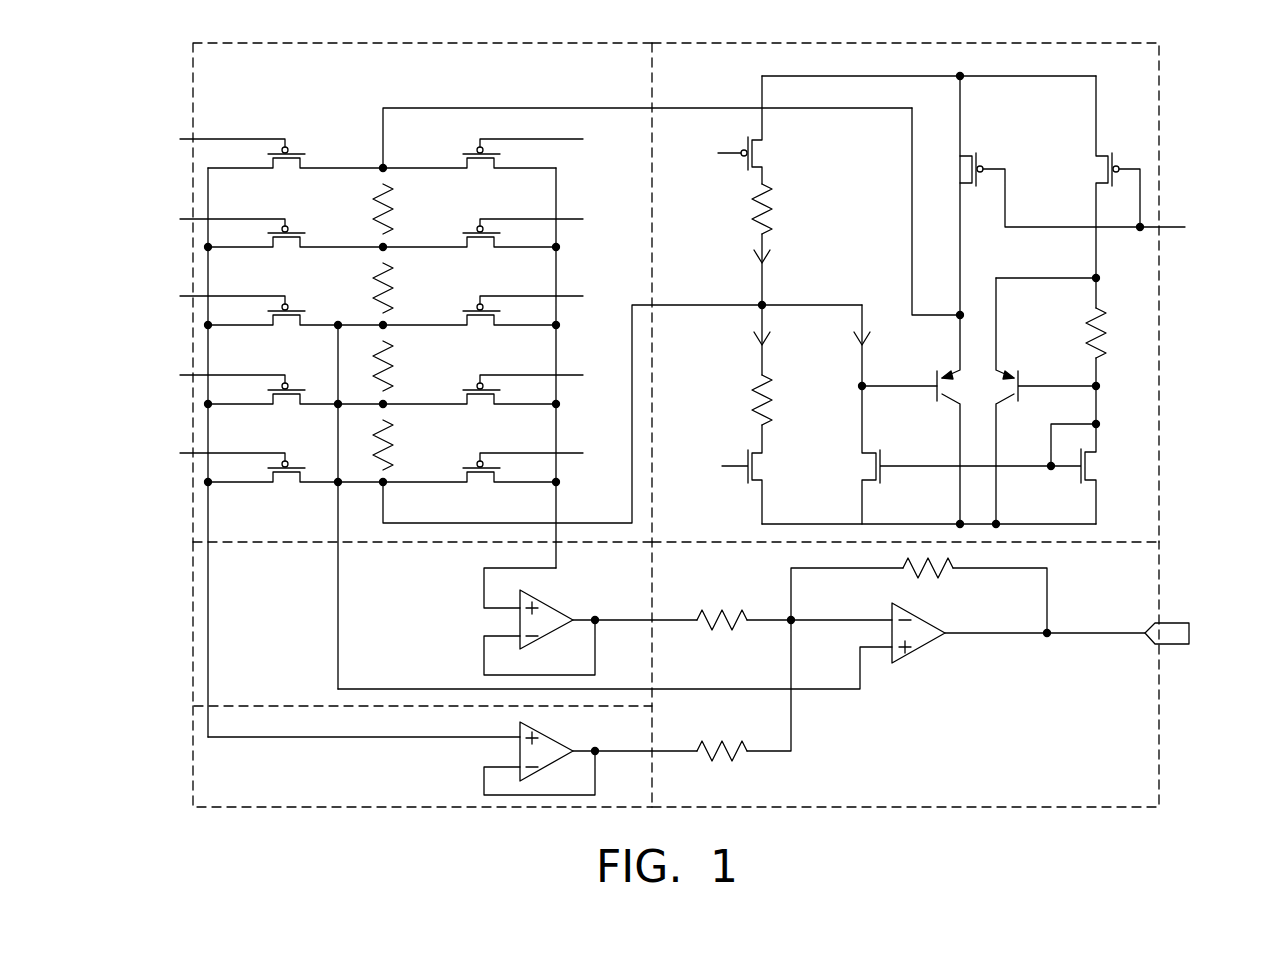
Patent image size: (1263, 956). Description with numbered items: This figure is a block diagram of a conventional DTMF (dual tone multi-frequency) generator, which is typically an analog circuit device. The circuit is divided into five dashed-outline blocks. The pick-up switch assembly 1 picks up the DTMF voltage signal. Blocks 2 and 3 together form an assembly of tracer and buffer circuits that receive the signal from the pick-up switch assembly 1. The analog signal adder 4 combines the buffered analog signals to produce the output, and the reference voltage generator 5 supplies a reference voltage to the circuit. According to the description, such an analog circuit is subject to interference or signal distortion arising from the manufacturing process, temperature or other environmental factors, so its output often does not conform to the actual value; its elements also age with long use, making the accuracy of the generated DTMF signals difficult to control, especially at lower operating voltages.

The pick-up switch assembly 1 is at (226, 73).
The tracer and buffer circuit block 2 is at (226, 774).
The tracer and buffer circuit block 3 is at (226, 636).
The analog signal adder 4 is at (1140, 702).
The reference voltage generator 5 is at (1140, 69).